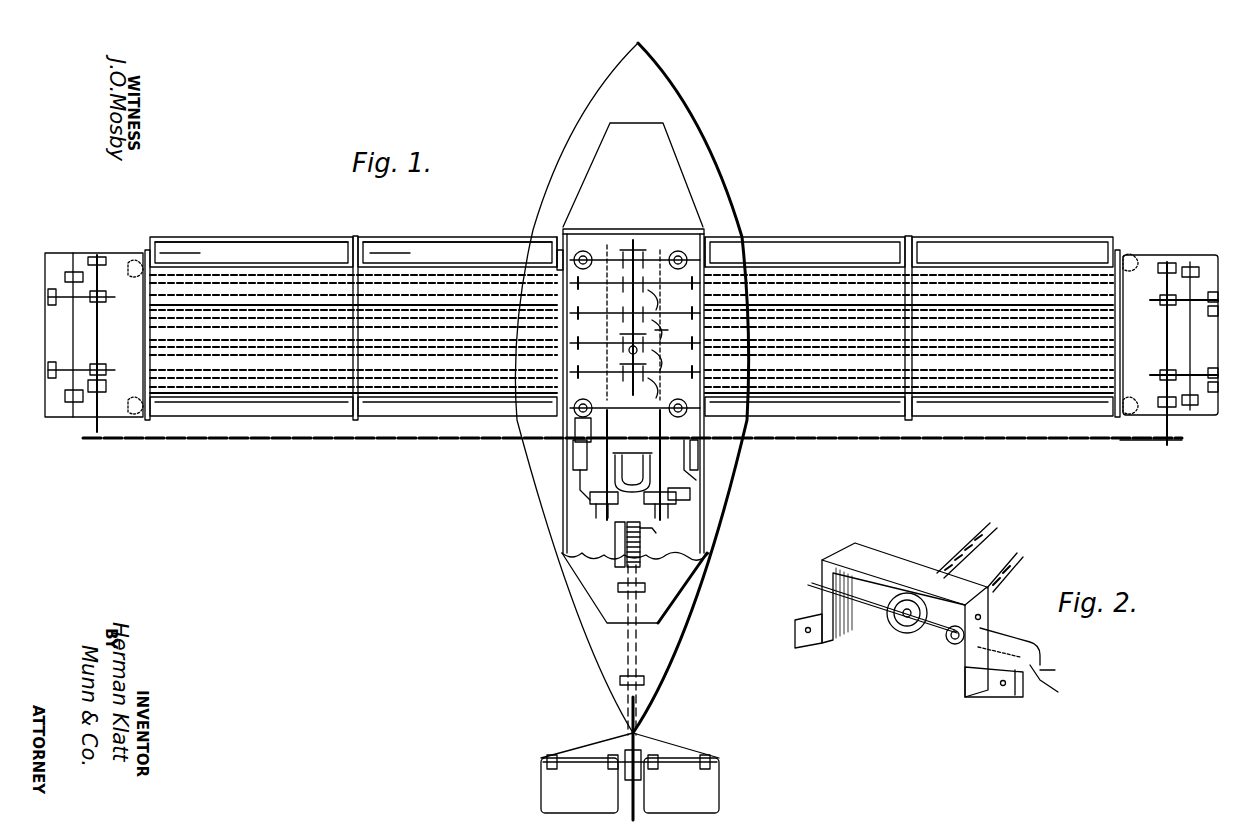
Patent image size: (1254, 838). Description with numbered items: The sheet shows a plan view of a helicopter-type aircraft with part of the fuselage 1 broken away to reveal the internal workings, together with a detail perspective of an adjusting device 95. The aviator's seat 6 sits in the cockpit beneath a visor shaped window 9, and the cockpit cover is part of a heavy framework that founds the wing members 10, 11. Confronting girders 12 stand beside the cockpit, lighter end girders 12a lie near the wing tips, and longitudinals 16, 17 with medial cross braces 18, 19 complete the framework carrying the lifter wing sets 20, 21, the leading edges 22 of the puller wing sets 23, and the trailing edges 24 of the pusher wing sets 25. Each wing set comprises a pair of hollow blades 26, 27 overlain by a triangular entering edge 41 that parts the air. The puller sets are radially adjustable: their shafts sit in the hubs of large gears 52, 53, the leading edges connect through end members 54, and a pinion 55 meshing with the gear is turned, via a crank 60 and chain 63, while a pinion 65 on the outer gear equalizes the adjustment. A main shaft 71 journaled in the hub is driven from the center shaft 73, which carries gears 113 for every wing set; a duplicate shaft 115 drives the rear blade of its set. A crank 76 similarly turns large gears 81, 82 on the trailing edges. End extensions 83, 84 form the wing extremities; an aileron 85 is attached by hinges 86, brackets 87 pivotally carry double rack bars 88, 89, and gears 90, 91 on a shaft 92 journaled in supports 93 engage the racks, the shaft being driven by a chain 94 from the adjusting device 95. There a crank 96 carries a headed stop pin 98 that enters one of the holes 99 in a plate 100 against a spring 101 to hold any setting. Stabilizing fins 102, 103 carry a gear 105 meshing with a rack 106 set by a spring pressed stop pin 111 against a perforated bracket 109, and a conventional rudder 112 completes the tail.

In FIG. 1, the fuselage 1 is at (740, 170).
In FIG. 1, the aviator's seat 6 is at (583, 222).
In FIG. 1, the visor shaped window 9 is at (648, 135).
In FIG. 1, the wing member 10 is at (296, 230).
In FIG. 1, the wing member 11 is at (944, 226).
In FIG. 1, the girder 12 is at (560, 236).
In FIG. 1, the end girder 12a is at (108, 292).
In FIG. 1, the longitudinal 16 is at (162, 305).
In FIG. 1, the longitudinal 17 is at (840, 292).
In FIG. 1, the medial cross brace 18 is at (344, 405).
In FIG. 1, the medial cross brace 19 is at (910, 325).
In FIG. 1, the lifter wing set 20 is at (228, 272).
In FIG. 1, the lifter wing set 21 is at (820, 270).
In FIG. 1, the leading edge 22 is at (200, 234).
In FIG. 1, the puller wing set 23 is at (205, 246).
In FIG. 1, the trailing edge 24 is at (428, 400).
In FIG. 1, the pusher wing set 25 is at (245, 408).
In FIG. 1, the hollow blade 26 is at (272, 290).
In FIG. 1, the hollow blade 27 is at (300, 298).
In FIG. 1, the triangular entering edge 41 is at (242, 312).
In FIG. 1, the large gear 52 is at (565, 250).
In FIG. 1, the large gear 53 is at (147, 258).
In FIG. 1, the end member 54 is at (152, 256).
In FIG. 1, the pinion 55 is at (592, 258).
In FIG. 1, the crank 60 is at (578, 478).
In FIG. 1, the chain 63 is at (610, 426).
In FIG. 1, the pinion 65 is at (130, 262).
In FIG. 1, the main shaft 71 is at (620, 250).
In FIG. 1, the center shaft 73 is at (668, 331).
In FIG. 1, the crank 76 is at (692, 494).
In FIG. 1, the large gear 81 is at (576, 430).
In FIG. 1, the large gear 82 is at (135, 402).
In FIG. 1, the end extension 83 is at (80, 262).
In FIG. 1, the end extension 84 is at (1140, 252).
In FIG. 1, the aileron 85 is at (1212, 256).
In FIG. 1, the hinge 86 is at (1192, 266).
In FIG. 1, the bracket 87 is at (1212, 368).
In FIG. 1, the double rack bar 88 is at (1178, 302).
In FIG. 1, the double rack bar 89 is at (1184, 370).
In FIG. 1, the gear 90 is at (1160, 376).
In FIG. 2, the gear 91 is at (984, 603).
In FIG. 1, the shaft 92 is at (1166, 319).
In FIG. 1, the support 93 is at (1168, 262).
In FIG. 1, the chain 94 is at (1040, 440).
In FIG. 2, the chain 94 is at (980, 557).
In FIG. 1, the adjusting device 95 is at (590, 480).
In FIG. 2, the adjusting device 95 is at (905, 614).
In FIG. 1, the crank 96 is at (700, 478).
In FIG. 2, the crank 96 is at (1050, 690).
In FIG. 2, the headed stop pin 98 is at (1042, 654).
In FIG. 2, the hole 99 is at (952, 645).
In FIG. 2, the plate 100 is at (930, 632).
In FIG. 2, the spring 101 is at (1000, 695).
In FIG. 1, the stabilizing fin 102 is at (541, 793).
In FIG. 1, the stabilizing fin 103 is at (712, 790).
In FIG. 1, the gear 105 is at (644, 740).
In FIG. 1, the rack 106 is at (640, 548).
In FIG. 1, the bracket 109 is at (616, 540).
In FIG. 1, the spring pressed stop pin 111 is at (666, 534).
In FIG. 1, the rudder 112 is at (636, 818).
In FIG. 1, the gear 113 is at (648, 248).
In FIG. 1, the duplicate shaft 115 is at (656, 292).